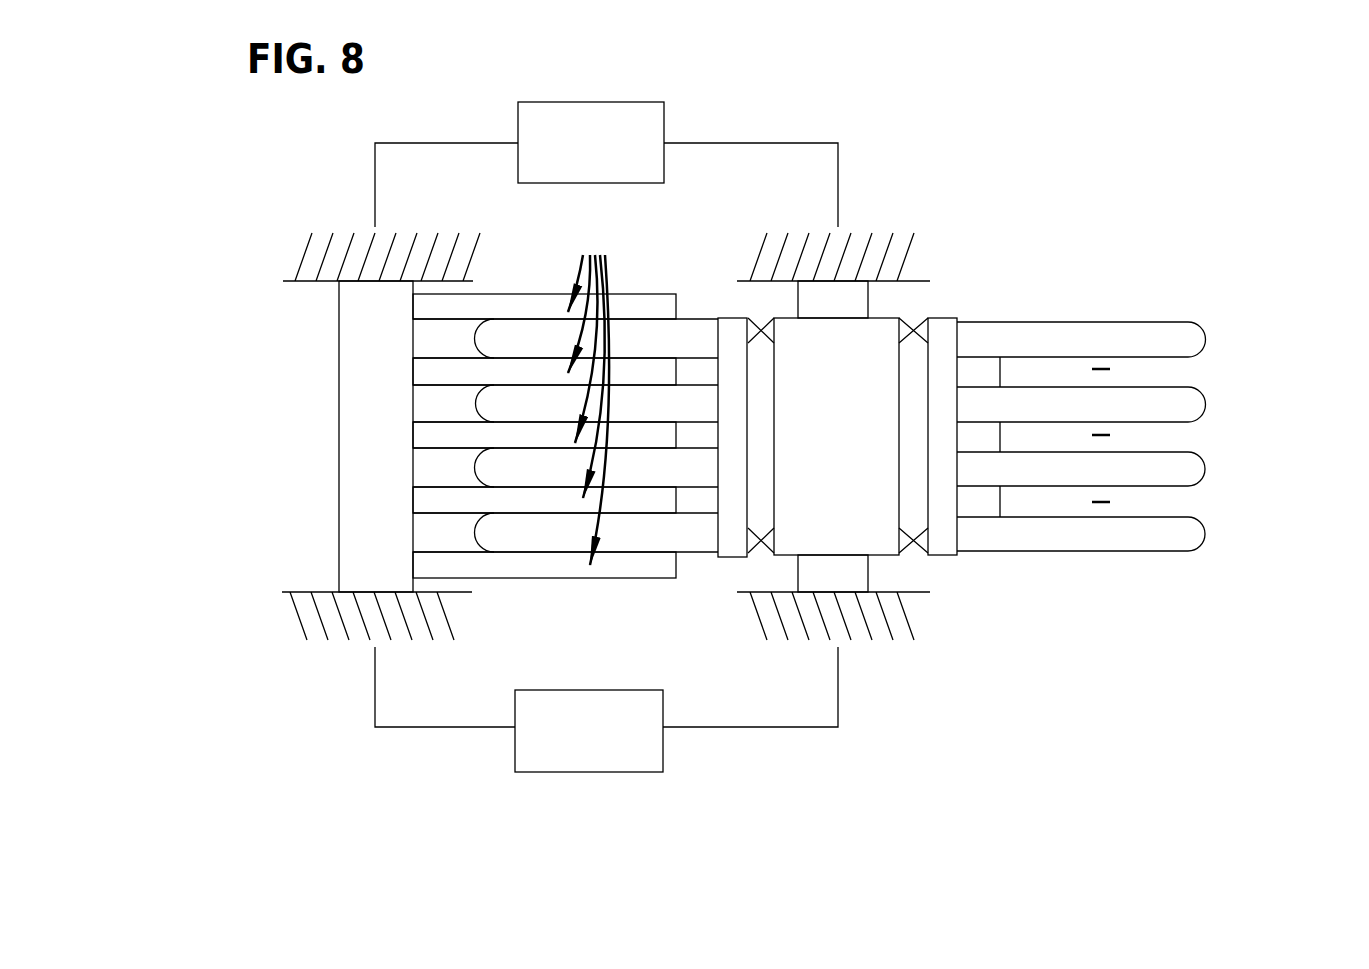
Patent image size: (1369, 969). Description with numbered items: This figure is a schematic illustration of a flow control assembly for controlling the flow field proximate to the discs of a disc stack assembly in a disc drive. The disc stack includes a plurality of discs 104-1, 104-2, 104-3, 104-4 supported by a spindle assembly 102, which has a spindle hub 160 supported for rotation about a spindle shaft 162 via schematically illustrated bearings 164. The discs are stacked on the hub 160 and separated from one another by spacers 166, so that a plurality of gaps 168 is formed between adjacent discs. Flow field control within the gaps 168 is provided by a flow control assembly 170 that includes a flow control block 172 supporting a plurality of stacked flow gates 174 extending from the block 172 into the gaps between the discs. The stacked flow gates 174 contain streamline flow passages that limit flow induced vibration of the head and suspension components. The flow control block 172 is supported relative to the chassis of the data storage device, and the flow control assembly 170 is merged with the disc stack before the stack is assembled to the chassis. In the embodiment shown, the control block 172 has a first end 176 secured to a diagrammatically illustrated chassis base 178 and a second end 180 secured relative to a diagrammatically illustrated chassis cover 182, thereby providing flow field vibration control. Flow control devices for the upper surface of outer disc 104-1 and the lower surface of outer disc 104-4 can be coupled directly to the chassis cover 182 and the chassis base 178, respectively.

The spindle assembly 102 is at (845, 278).
The first disc 104-1 is at (1207, 332).
The second disc 104-2 is at (1207, 397).
The third disc 104-3 is at (1207, 461).
The fourth disc 104-4 is at (1207, 526).
The spindle hub 160 is at (943, 328).
The spindle shaft 162 is at (880, 338).
The bearings 164 is at (757, 323).
The spacers 166 is at (982, 369).
The gaps 168 is at (1110, 369).
The flow control assembly 170 is at (433, 325).
The flow control block 172 is at (363, 365).
The stacked flow gates 174 is at (590, 395).
The first end 176 is at (290, 593).
The chassis base 178 is at (548, 688).
The second end 180 is at (352, 282).
The chassis cover 182 is at (607, 100).